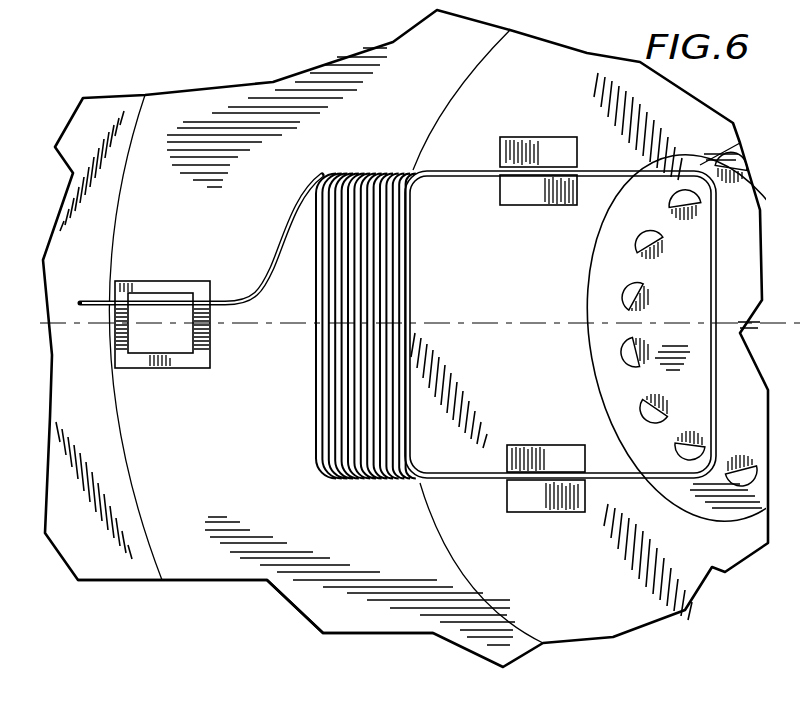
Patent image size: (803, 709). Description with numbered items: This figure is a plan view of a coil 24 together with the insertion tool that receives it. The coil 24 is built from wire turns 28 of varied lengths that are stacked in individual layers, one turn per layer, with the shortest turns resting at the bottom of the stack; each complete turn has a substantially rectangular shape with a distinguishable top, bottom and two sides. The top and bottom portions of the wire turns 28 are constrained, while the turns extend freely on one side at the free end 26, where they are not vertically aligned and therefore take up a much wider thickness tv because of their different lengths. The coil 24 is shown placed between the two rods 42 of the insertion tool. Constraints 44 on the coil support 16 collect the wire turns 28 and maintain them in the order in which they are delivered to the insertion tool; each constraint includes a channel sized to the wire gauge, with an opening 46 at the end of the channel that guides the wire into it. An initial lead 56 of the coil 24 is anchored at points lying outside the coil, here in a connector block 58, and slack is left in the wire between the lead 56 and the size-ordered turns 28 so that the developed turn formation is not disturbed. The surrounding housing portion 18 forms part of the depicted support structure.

The coil support 16 is at (472, 545).
The housing base 18 is at (300, 580).
The coil 24 is at (430, 170).
The free end 26 is at (313, 328).
The wire turns 28 is at (345, 334).
The rods 42 is at (650, 365).
The constraints 44 is at (548, 131).
The opening 46 is at (530, 196).
The initial lead 56 is at (266, 275).
The connector block 58 is at (147, 291).
The thickness tv is at (414, 316).